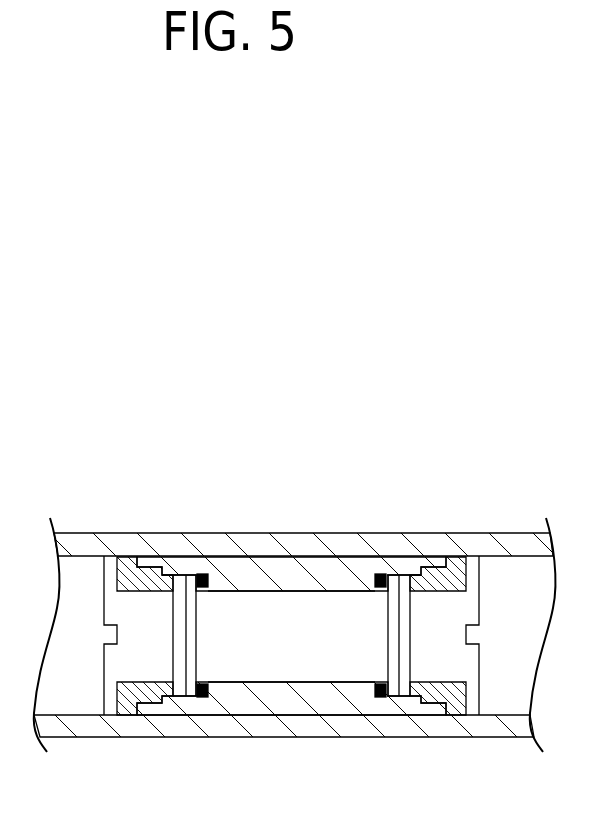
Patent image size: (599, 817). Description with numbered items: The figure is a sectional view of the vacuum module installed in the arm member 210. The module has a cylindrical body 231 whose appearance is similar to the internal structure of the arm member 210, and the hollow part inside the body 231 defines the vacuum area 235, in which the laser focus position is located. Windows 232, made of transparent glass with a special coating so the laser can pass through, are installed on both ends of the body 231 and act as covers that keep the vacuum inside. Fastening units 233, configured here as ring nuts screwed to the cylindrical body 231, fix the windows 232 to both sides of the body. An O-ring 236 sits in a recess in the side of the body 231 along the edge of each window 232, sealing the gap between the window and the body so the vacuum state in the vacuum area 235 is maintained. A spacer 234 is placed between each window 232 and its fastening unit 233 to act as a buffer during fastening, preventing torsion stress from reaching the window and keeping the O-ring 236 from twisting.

The arm member 210 is at (483, 532).
The body 231 is at (290, 568).
The window 232 is at (192, 582).
The fastening unit 233 is at (125, 565).
The spacer 234 is at (180, 690).
The vacuum area 235 is at (290, 648).
The O-ring 236 is at (380, 575).